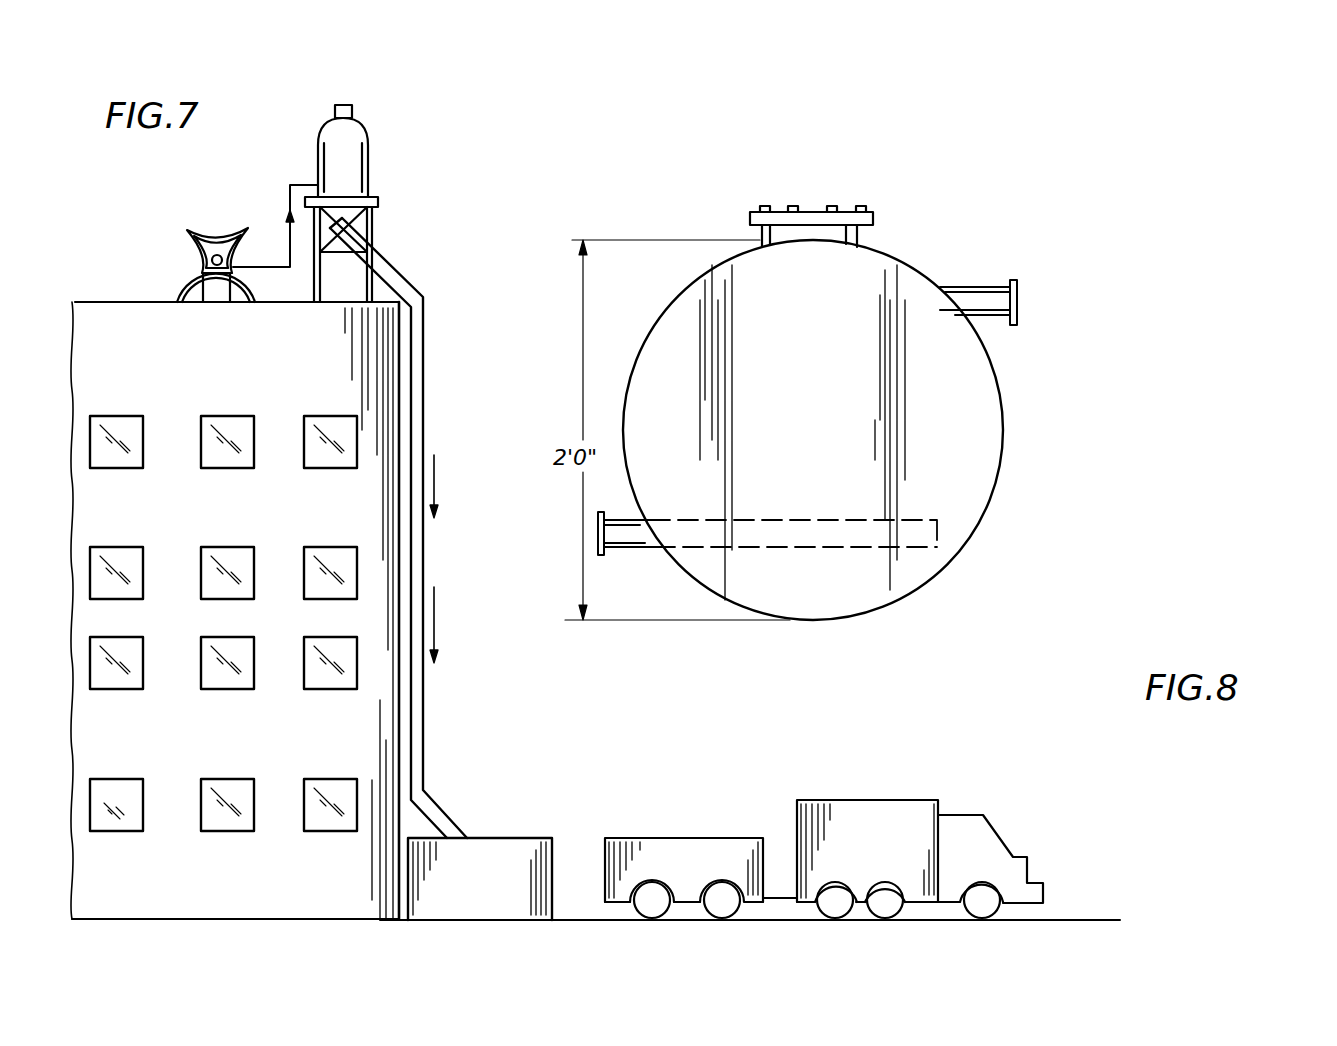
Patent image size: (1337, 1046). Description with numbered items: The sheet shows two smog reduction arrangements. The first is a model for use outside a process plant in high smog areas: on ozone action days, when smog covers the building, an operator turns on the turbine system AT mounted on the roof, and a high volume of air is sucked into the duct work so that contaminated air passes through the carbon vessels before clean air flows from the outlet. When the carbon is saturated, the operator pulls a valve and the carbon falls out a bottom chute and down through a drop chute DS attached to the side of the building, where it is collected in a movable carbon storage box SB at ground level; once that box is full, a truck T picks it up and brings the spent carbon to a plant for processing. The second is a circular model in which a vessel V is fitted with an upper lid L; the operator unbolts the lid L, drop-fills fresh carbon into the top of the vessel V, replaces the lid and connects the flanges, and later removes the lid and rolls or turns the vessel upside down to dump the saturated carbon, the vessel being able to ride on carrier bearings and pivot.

In FIG. 7, the turbine system AT is at (170, 231).
In FIG. 7, the drop chute DS is at (430, 344).
In FIG. 7, the movable carbon storage box SB is at (540, 838).
In FIG. 7, the truck T is at (938, 800).
In FIG. 8, the lid L is at (782, 208).
In FIG. 8, the vessel V is at (1003, 450).